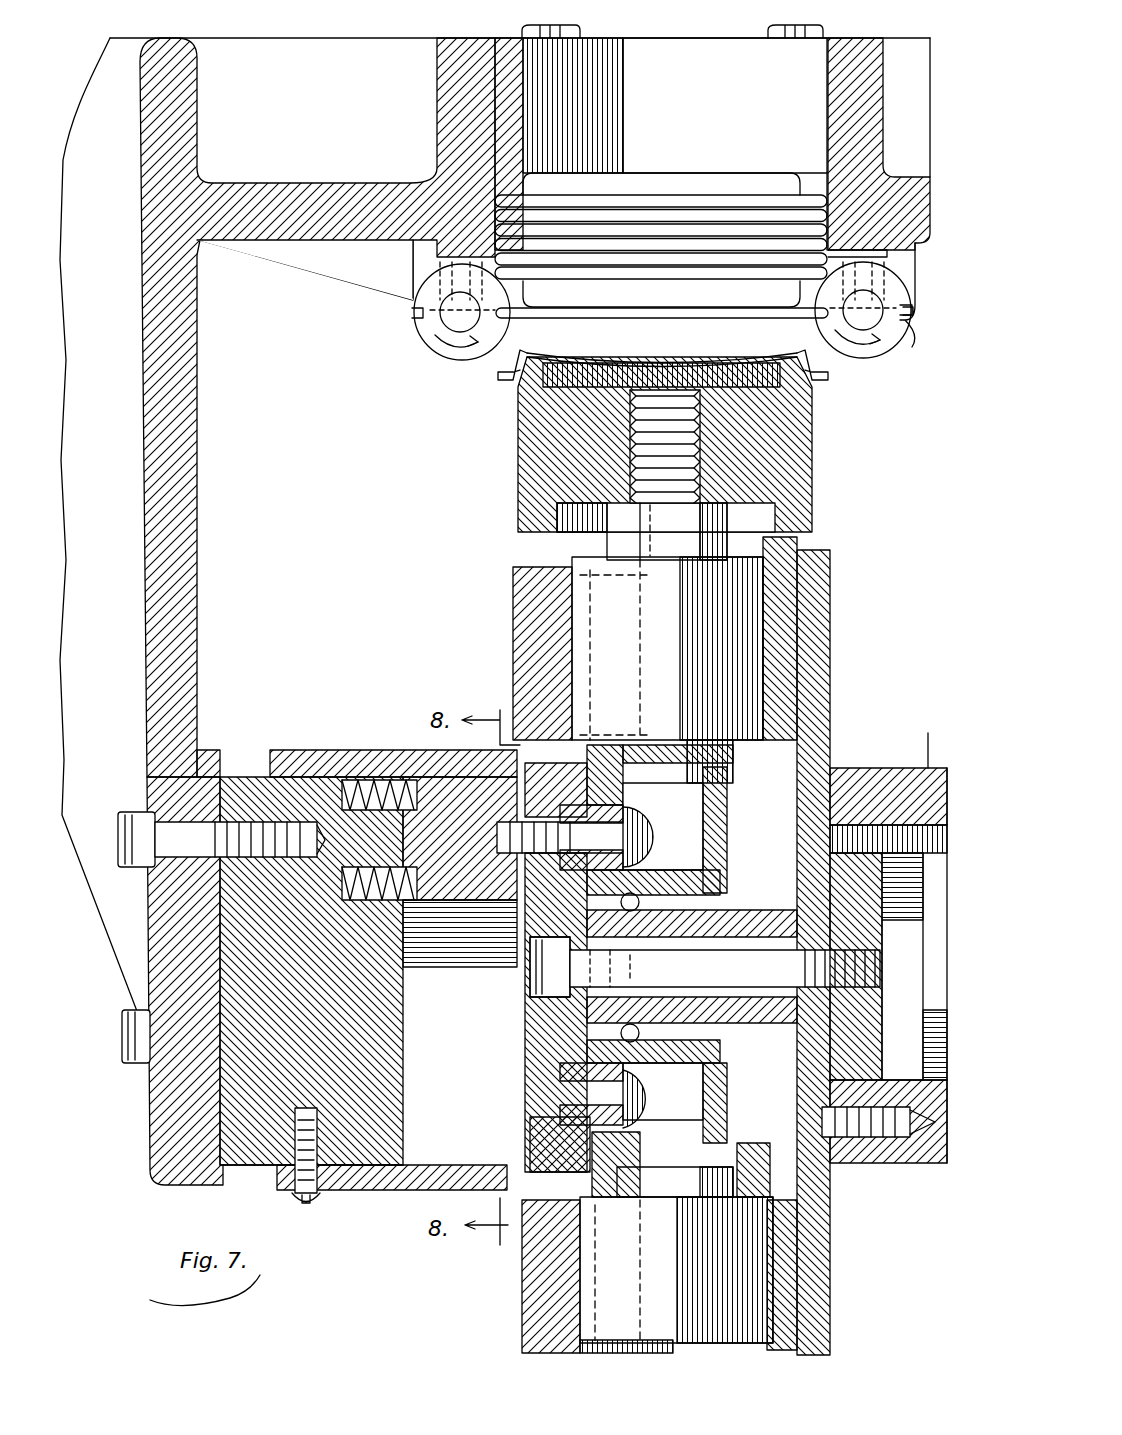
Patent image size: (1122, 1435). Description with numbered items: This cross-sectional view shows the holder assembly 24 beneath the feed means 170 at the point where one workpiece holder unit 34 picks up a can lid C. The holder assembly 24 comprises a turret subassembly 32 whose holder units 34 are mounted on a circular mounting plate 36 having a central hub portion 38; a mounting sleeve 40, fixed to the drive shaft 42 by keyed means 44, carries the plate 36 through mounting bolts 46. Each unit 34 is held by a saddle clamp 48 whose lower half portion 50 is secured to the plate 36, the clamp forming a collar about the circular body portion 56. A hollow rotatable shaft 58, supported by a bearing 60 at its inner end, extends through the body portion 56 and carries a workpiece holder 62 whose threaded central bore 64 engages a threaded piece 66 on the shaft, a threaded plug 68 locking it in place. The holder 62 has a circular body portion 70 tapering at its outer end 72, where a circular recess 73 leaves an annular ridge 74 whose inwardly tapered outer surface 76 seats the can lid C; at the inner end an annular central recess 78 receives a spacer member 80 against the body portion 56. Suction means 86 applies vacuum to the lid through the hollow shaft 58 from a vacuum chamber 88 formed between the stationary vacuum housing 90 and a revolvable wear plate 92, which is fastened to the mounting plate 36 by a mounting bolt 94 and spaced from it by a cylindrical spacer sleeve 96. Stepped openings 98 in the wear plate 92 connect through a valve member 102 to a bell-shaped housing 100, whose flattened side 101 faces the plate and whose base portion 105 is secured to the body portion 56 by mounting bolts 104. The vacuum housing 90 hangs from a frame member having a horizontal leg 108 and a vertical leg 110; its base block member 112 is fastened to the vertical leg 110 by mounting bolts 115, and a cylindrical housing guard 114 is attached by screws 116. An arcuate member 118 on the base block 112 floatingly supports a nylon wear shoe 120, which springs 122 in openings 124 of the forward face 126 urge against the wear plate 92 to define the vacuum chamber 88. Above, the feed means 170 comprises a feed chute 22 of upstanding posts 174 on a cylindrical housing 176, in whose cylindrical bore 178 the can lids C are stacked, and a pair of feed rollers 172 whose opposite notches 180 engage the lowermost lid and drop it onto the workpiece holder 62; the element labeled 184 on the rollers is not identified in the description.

The feed chute 22 is at (486, 185).
The holder assembly 24 is at (488, 588).
The turret subassembly 32 is at (512, 707).
The workpiece holder unit 34 is at (832, 645).
The circular mounting plate 36 is at (830, 692).
The hub portion 38 is at (880, 800).
The mounting sleeve 40 is at (897, 1163).
The drive shaft 42 is at (930, 1165).
The keyed means 44 is at (920, 738).
The mounting bolts 46 is at (832, 1180).
The saddle clamp 48 is at (513, 612).
The lower half portion 50 is at (790, 575).
The circular body portion 56 is at (812, 612).
The hollow rotatable shaft 58 is at (690, 622).
The bearing 60 is at (727, 806).
The workpiece holder 62 is at (812, 435).
The threaded central bore 64 is at (700, 395).
The threaded piece 66 is at (625, 460).
The threaded plug 68 is at (632, 430).
The circular body portion 70 is at (540, 455).
The outer end 72 is at (515, 382).
The circular recess 73 is at (585, 360).
The annular ridge 74 is at (520, 405).
The inwardly tapered outer surface 76 is at (770, 320).
The annular central recess 78 is at (775, 528).
The spacer member 80 is at (610, 545).
The suction means 86 is at (840, 780).
The vacuum chamber 88 is at (517, 930).
The vacuum housing 90 is at (393, 1192).
The wear plate 92 is at (525, 1042).
The mounting bolt 94 is at (530, 990).
The spacer sleeve 96 is at (725, 1023).
The stepped circular openings 98 is at (525, 960).
The bell-shaped housing 100 is at (730, 845).
The flattened side 101 is at (590, 755).
The valve member 102 is at (645, 822).
The mounting bolts 104 is at (640, 900).
The base portion 105 is at (760, 760).
The horizontal leg 108 is at (318, 232).
The vertical leg 110 is at (150, 970).
The base block member 112 is at (220, 1140).
The cylindrical housing guard 114 is at (135, 866).
The mounting bolts 115 is at (288, 748).
The screws 116 is at (320, 1200).
The arcuate member 118 is at (490, 770).
The wear shoe member 120 is at (410, 890).
The springs 122 is at (350, 780).
The openings 124 is at (395, 780).
The forward face 126 is at (403, 1085).
The feed means 170 is at (768, 114).
The feed rollers 172 is at (452, 348).
The upstanding spaced posts 174 is at (768, 33).
The cylindrical housing 176 is at (885, 125).
The cylindrical bore 178 is at (500, 65).
The notches 180 is at (418, 320).
The pulley hub 184 is at (445, 302).
The can lid C is at (640, 186).